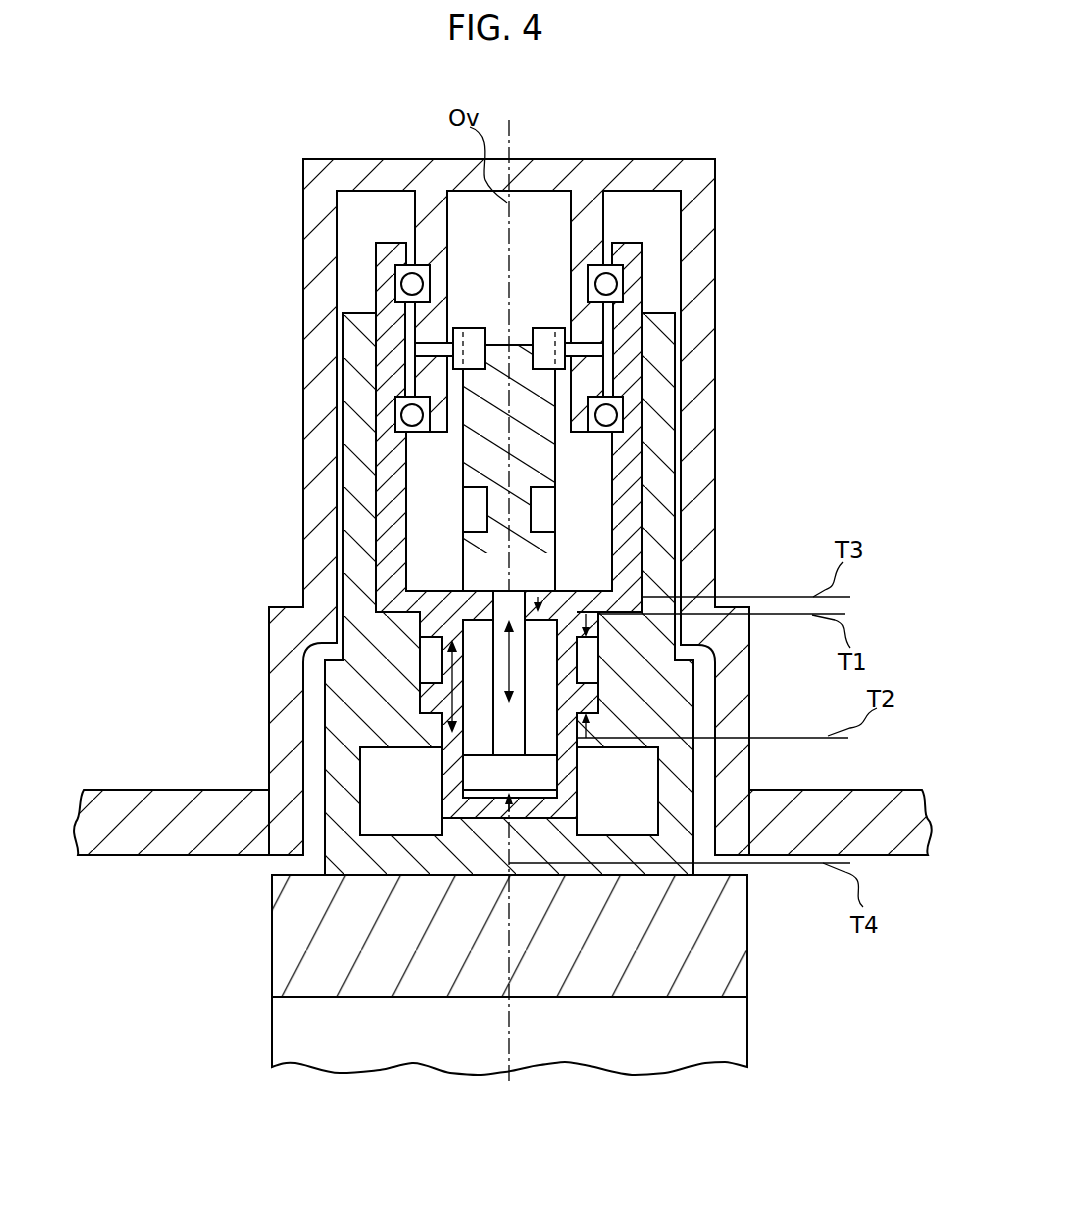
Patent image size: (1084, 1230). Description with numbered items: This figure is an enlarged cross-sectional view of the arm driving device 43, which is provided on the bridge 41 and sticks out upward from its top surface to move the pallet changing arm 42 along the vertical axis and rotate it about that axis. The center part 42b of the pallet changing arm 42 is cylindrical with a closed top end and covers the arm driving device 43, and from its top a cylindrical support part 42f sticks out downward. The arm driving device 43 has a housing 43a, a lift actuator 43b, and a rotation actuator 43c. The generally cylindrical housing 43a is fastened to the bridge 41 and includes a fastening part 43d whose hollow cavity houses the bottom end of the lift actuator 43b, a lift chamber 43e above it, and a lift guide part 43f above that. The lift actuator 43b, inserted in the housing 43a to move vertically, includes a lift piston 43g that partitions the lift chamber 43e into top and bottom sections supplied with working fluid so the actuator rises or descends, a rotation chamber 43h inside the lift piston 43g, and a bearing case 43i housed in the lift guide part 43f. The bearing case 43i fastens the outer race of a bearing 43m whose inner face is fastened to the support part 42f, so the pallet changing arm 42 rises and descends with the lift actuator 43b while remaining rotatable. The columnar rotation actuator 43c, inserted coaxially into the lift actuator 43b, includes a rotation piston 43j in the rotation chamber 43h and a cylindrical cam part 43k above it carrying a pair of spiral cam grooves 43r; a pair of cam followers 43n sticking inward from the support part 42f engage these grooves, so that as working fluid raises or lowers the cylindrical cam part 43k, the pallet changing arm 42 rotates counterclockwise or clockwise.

The bridge 41 is at (300, 950).
The pallet changing arm 42 is at (292, 156).
The center part 42b is at (580, 177).
The support part 42f is at (428, 237).
The arm driving device 43 is at (662, 245).
The housing 43a is at (340, 712).
The lift actuator 43b is at (345, 575).
The rotation actuator 43c is at (525, 437).
The fastening part 43d is at (345, 765).
The lift chamber 43e is at (420, 655).
The lift guide part 43f is at (352, 465).
The lift piston 43g is at (600, 700).
The rotation chamber 43h is at (600, 660).
The bearing case 43i is at (615, 347).
The rotation piston 43j is at (525, 772).
The cylindrical cam part 43k is at (575, 455).
The bearing 43m is at (376, 343).
The cam followers 43n is at (486, 330).
The cam grooves 43r is at (463, 492).